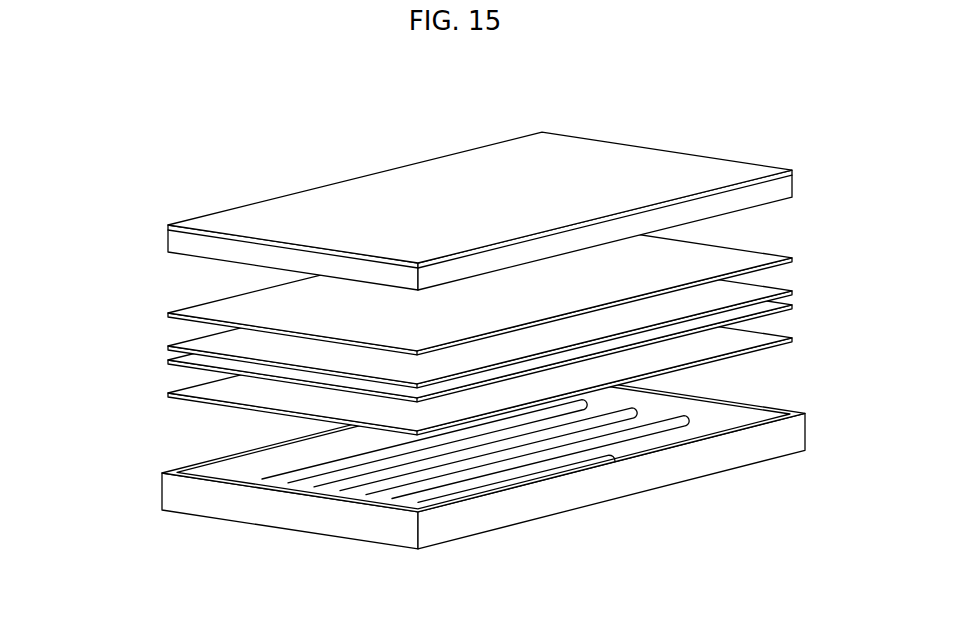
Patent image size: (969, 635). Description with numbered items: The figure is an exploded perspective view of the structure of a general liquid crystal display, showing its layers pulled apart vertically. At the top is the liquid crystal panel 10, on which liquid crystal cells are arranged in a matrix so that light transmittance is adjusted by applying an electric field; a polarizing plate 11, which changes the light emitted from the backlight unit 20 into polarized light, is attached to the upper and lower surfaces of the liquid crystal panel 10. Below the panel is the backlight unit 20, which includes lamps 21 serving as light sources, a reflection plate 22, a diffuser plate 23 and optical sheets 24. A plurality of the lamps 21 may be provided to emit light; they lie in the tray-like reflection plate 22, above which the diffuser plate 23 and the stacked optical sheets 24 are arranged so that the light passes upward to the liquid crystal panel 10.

The liquid crystal panel 10 is at (446, 200).
The polarizing plate 11 is at (722, 170).
The backlight unit 20 is at (470, 393).
The lamps 21 is at (670, 427).
The reflection plate 22 is at (620, 460).
The diffuser plate 23 is at (757, 338).
The optical sheets 24 is at (755, 260).